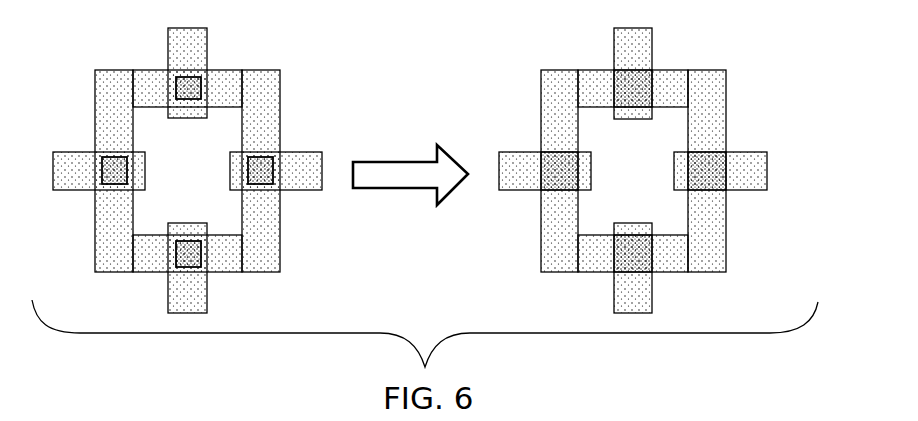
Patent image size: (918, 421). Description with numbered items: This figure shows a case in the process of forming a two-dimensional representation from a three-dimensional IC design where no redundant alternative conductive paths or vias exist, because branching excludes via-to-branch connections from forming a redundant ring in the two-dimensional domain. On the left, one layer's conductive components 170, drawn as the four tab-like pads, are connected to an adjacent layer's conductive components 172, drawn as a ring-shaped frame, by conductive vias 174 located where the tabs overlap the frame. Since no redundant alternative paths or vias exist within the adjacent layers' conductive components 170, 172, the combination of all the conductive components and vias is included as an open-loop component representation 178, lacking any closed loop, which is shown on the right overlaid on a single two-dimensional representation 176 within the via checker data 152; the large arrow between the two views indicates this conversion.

The via checker data 152 is at (671, 170).
The conductive components 170 is at (168, 43).
The conductive components 172 is at (258, 70).
The conductive vias 174 is at (250, 172).
The single 2D representation 176 is at (704, 70).
The open-loop component representation 178 is at (578, 180).